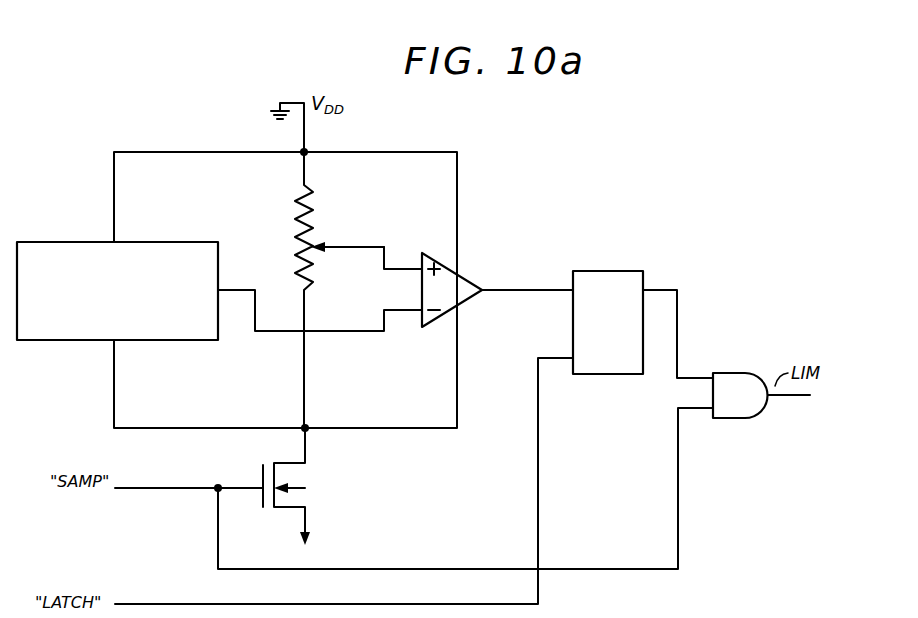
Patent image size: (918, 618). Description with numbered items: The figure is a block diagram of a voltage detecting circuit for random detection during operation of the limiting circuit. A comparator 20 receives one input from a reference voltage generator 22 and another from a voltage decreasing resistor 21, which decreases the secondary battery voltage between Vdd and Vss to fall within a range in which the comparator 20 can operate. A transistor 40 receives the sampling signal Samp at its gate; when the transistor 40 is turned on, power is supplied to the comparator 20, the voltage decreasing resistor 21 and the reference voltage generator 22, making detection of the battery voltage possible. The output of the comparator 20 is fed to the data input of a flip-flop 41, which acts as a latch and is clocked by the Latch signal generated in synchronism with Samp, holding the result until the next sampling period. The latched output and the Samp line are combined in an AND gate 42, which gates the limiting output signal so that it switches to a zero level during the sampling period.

The comparator 20 is at (458, 272).
The voltage decreasing resistor 21 is at (316, 224).
The reference voltage generator 22 is at (139, 242).
The transistor 40 is at (287, 506).
The flip-flop 41 is at (597, 270).
The AND gate 42 is at (722, 373).